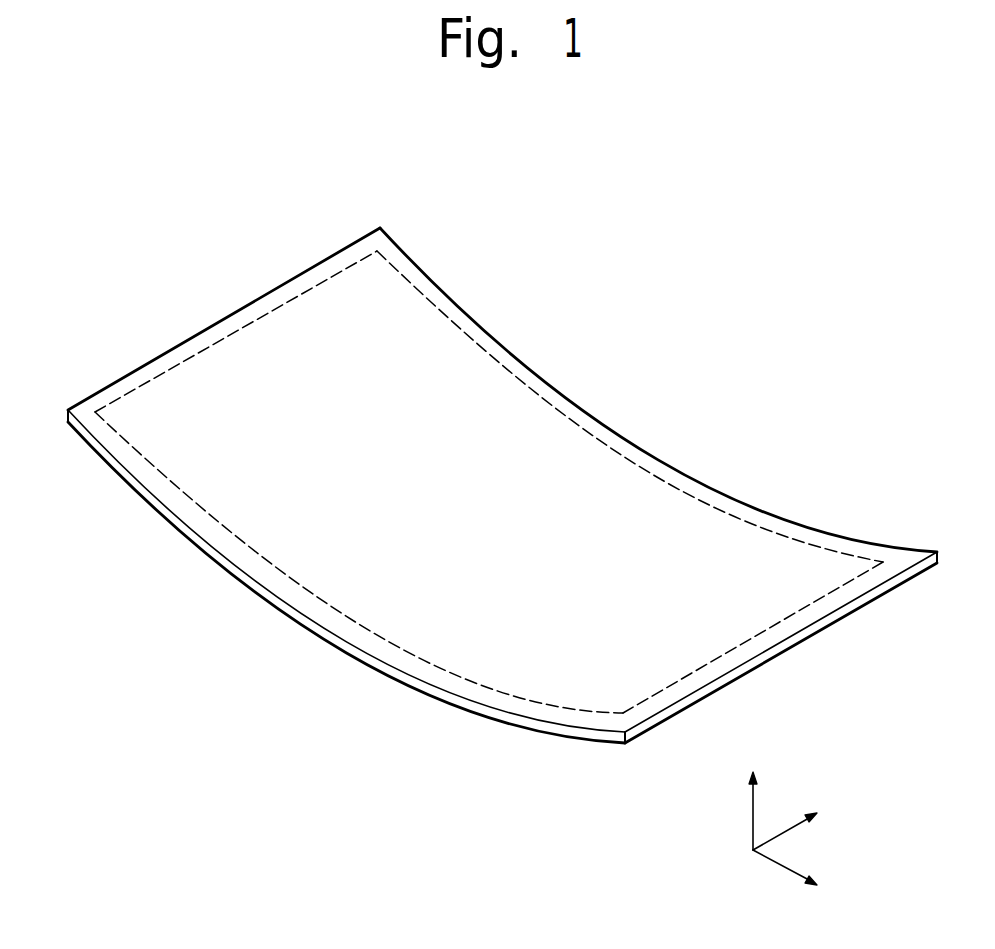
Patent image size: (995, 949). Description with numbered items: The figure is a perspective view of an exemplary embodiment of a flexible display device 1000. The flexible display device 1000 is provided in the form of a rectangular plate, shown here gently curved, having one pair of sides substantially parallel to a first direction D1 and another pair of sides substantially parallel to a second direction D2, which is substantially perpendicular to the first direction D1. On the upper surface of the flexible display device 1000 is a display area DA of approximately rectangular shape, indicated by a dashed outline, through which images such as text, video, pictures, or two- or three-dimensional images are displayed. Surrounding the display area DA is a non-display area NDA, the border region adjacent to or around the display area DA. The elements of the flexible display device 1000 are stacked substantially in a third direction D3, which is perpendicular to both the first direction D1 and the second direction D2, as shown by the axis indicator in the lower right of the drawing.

The flexible display device 1000 is at (502, 472).
The non-display area NDA is at (598, 430).
The display area DA is at (720, 510).
The first direction D1 is at (800, 878).
The second direction D2 is at (800, 823).
The third direction D3 is at (752, 797).